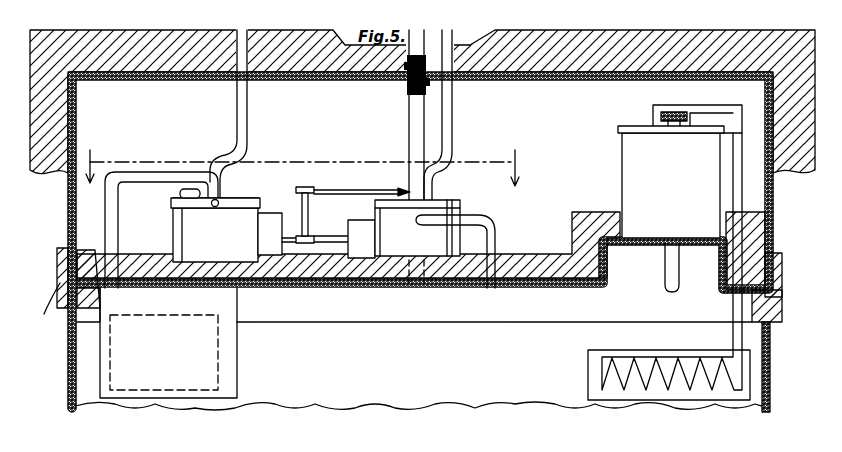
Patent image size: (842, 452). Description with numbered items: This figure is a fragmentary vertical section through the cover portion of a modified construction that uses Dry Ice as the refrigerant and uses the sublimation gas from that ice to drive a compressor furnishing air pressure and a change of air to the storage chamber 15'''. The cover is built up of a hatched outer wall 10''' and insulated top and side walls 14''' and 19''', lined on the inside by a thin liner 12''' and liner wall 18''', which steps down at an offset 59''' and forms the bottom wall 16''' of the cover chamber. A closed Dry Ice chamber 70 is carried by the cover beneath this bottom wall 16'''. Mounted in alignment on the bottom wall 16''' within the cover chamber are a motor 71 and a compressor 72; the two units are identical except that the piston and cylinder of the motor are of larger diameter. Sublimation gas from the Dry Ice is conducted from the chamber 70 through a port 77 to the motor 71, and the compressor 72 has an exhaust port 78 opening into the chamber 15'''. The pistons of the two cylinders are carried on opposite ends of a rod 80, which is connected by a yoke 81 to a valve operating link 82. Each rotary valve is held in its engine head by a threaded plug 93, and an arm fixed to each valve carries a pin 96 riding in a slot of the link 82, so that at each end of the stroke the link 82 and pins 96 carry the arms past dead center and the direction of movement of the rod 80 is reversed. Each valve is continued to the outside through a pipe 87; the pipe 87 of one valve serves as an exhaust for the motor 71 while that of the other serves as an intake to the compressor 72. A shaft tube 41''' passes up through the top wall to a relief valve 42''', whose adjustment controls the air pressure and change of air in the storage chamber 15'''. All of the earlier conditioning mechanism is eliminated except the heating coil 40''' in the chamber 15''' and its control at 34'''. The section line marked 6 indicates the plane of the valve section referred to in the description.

The cabinet outer wall 10''' is at (44, 377).
The inner liner 12''' is at (44, 229).
The insulated wall 14''' is at (422, 92).
The storage chamber 15''' is at (420, 366).
The bottom wall 16''' is at (338, 267).
The liner wall 18''' is at (395, 242).
The top wall insulation 19''' is at (163, 53).
The section line 6- 6 is at (301, 181).
The control 34''' is at (680, 198).
The heating coil 40''' is at (669, 291).
The shaft tube 41''' is at (382, 156).
The relief valve 42''' is at (390, 80).
The step / offset in liner 59''' is at (334, 278).
The Dry Ice chamber 70 is at (155, 372).
The motor 71 is at (226, 230).
The compressor 72 is at (417, 228).
The port 77 is at (120, 173).
The exhaust port 78 is at (498, 238).
The rod 80 is at (332, 241).
The yoke 81 is at (309, 212).
The valve operating link 82 is at (347, 190).
The pipe 87 is at (248, 107).
The threaded plug 93 is at (218, 206).
The pin 96 is at (202, 200).